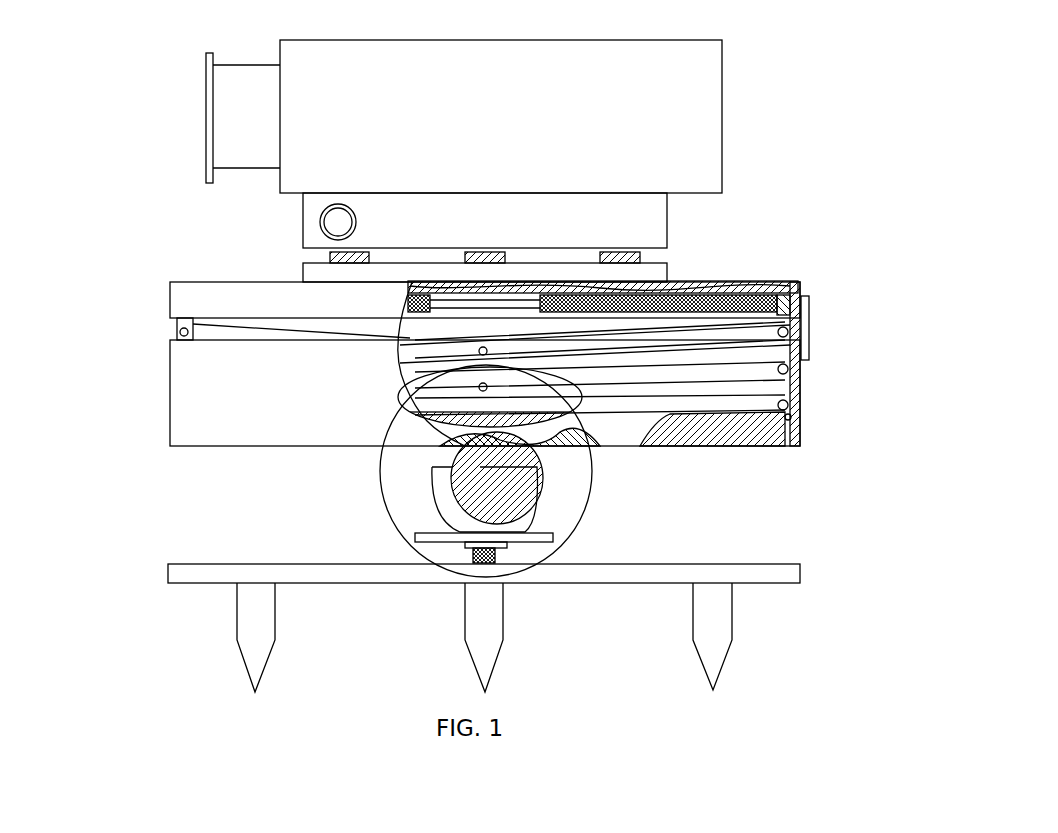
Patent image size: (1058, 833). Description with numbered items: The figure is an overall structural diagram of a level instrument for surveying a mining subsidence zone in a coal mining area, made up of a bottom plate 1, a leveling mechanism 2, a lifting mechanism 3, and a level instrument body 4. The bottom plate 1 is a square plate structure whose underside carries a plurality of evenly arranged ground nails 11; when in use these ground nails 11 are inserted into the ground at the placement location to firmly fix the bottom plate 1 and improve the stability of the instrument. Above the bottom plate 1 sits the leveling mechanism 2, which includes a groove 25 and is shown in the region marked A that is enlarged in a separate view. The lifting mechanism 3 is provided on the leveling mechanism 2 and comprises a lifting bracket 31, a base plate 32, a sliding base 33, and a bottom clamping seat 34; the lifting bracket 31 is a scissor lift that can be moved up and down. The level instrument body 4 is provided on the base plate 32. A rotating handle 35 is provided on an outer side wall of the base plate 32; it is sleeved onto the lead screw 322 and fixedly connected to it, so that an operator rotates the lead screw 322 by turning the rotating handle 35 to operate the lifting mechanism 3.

The bottom plate 1 is at (185, 568).
The ground nail 11 is at (240, 643).
The leveling mechanism 2 is at (540, 497).
The groove 25 is at (187, 402).
The lifting mechanism 3 is at (675, 328).
The lifting bracket 31 is at (805, 360).
The base plate 32 is at (203, 295).
The lead screw 322 is at (705, 297).
The sliding base 33 is at (782, 281).
The bottom clamping seat 34 is at (803, 410).
The rotating handle 35 is at (810, 297).
The level instrument body 4 is at (312, 218).
The detail region A is at (420, 548).